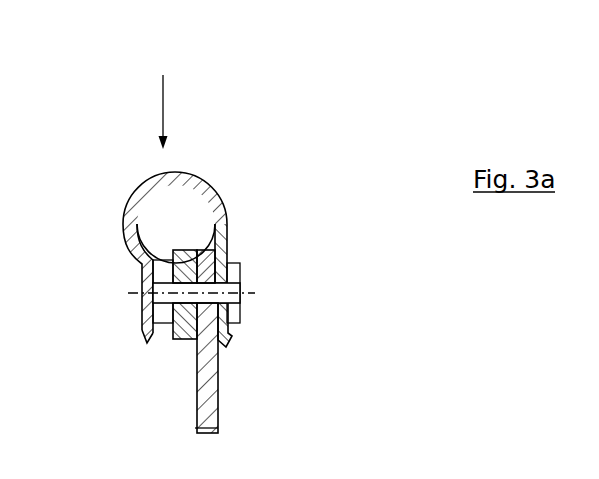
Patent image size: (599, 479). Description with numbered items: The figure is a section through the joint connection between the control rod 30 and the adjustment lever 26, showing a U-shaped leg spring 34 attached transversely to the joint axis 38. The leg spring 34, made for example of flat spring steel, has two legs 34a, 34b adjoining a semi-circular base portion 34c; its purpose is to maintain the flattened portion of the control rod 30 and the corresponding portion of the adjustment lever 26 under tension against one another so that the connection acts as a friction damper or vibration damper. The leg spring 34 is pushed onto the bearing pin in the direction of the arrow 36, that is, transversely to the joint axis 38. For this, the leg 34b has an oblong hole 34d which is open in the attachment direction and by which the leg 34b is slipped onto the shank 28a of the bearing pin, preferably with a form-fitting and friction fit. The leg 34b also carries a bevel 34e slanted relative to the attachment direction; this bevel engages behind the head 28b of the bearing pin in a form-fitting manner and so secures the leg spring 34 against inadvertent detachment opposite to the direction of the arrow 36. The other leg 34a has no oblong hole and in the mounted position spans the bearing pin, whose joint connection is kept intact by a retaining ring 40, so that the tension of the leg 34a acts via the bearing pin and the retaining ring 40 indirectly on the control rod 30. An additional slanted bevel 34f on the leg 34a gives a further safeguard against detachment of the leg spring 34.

The adjustment lever 26 is at (213, 390).
The shank 28a is at (187, 250).
The head 28b is at (241, 271).
The control rod 30 is at (176, 340).
The leg spring 34 is at (258, 180).
The leg 34a is at (142, 306).
The leg 34b is at (228, 244).
The semi-circular base portion 34c is at (184, 178).
The oblong hole 34d is at (227, 315).
The bevel 34e is at (230, 334).
The slanted bevel 34f is at (152, 340).
The arrow 36 is at (163, 89).
The joint axis 38 is at (112, 290).
The retaining ring 40 is at (163, 270).